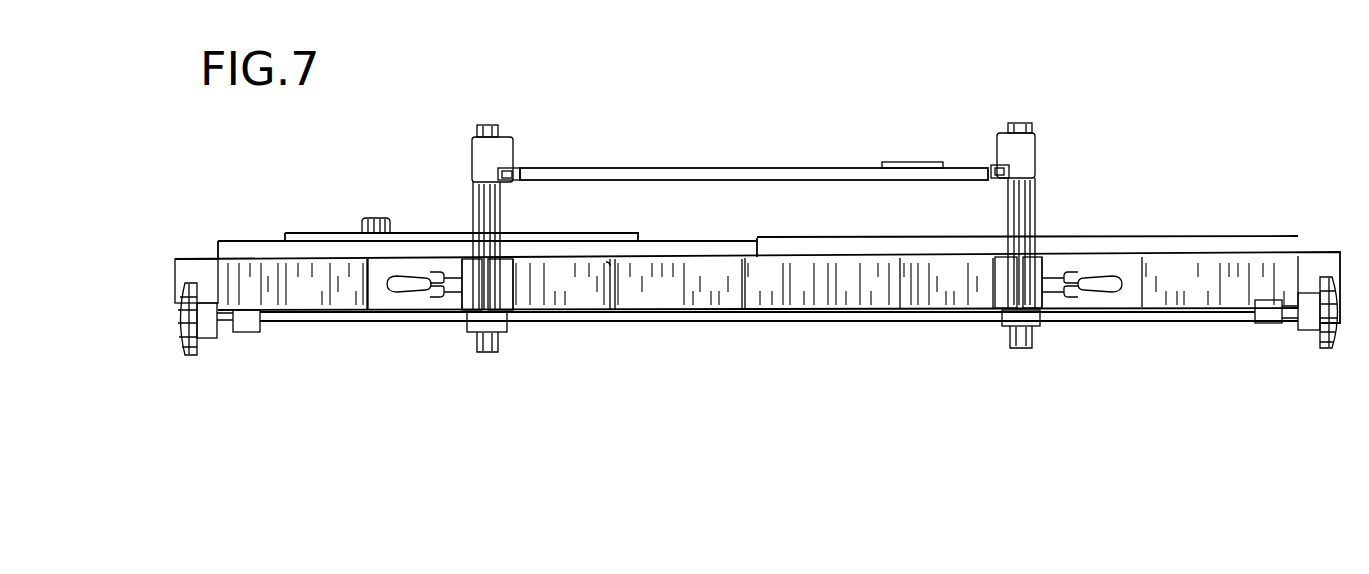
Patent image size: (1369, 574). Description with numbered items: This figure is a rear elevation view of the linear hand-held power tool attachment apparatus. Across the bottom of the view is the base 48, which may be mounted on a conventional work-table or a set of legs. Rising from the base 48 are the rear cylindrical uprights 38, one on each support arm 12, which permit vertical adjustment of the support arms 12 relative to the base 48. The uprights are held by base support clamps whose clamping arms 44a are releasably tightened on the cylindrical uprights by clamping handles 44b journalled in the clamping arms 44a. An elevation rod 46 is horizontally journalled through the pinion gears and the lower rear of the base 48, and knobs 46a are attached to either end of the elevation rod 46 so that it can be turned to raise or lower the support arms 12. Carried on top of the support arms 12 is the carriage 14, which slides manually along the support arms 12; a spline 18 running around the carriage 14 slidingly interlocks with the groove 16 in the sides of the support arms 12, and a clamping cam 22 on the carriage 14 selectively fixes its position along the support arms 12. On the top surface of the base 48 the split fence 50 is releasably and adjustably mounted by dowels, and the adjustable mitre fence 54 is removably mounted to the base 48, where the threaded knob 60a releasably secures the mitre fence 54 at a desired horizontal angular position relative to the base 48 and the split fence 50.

The support arm 12 is at (497, 147).
The carriage 14 is at (708, 170).
The groove 16 is at (470, 153).
The spline 18 is at (520, 175).
The clamping cam 22 is at (908, 160).
The rear cylindrical upright 38 is at (497, 215).
The clamping arm 44a is at (500, 290).
The clamping handle 44b is at (423, 285).
The elevation rod 46 is at (640, 328).
The knob 46a is at (173, 325).
The base 48 is at (193, 278).
The split fence 50 is at (255, 247).
The mitre fence 54 is at (322, 232).
The threaded knob 60a is at (380, 217).